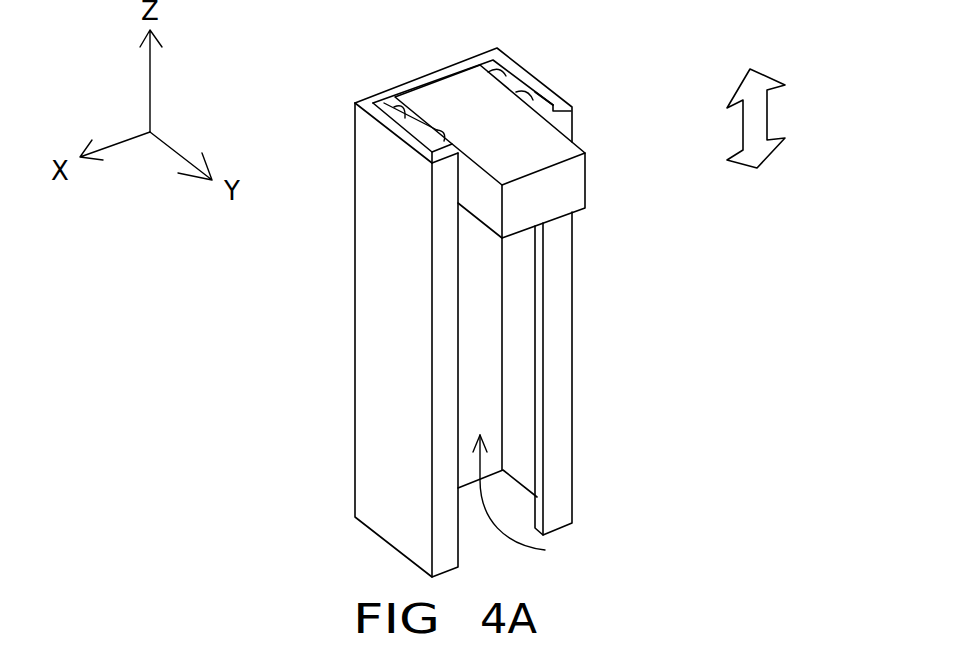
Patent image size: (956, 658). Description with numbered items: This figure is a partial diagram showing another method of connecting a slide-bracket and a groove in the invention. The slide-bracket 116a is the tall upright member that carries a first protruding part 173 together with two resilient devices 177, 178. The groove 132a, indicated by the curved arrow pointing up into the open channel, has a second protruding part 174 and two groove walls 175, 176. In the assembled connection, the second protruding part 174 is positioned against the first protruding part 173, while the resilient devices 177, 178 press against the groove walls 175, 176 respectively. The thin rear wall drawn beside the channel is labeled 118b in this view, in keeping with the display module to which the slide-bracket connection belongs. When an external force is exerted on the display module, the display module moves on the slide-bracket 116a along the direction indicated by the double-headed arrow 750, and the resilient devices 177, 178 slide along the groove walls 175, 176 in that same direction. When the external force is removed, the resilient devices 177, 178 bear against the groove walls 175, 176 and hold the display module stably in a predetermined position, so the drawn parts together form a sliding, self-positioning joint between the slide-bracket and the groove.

The slide-bracket 116a is at (568, 192).
The back wall 118b is at (555, 462).
The groove 132a is at (545, 550).
The first protruding part 173 is at (560, 97).
The second protruding part 174 is at (560, 108).
The groove wall 175 is at (380, 118).
The groove wall 176 is at (527, 77).
The resilient device 177 is at (406, 118).
The resilient device 178 is at (502, 78).
The arrow 750 is at (757, 80).